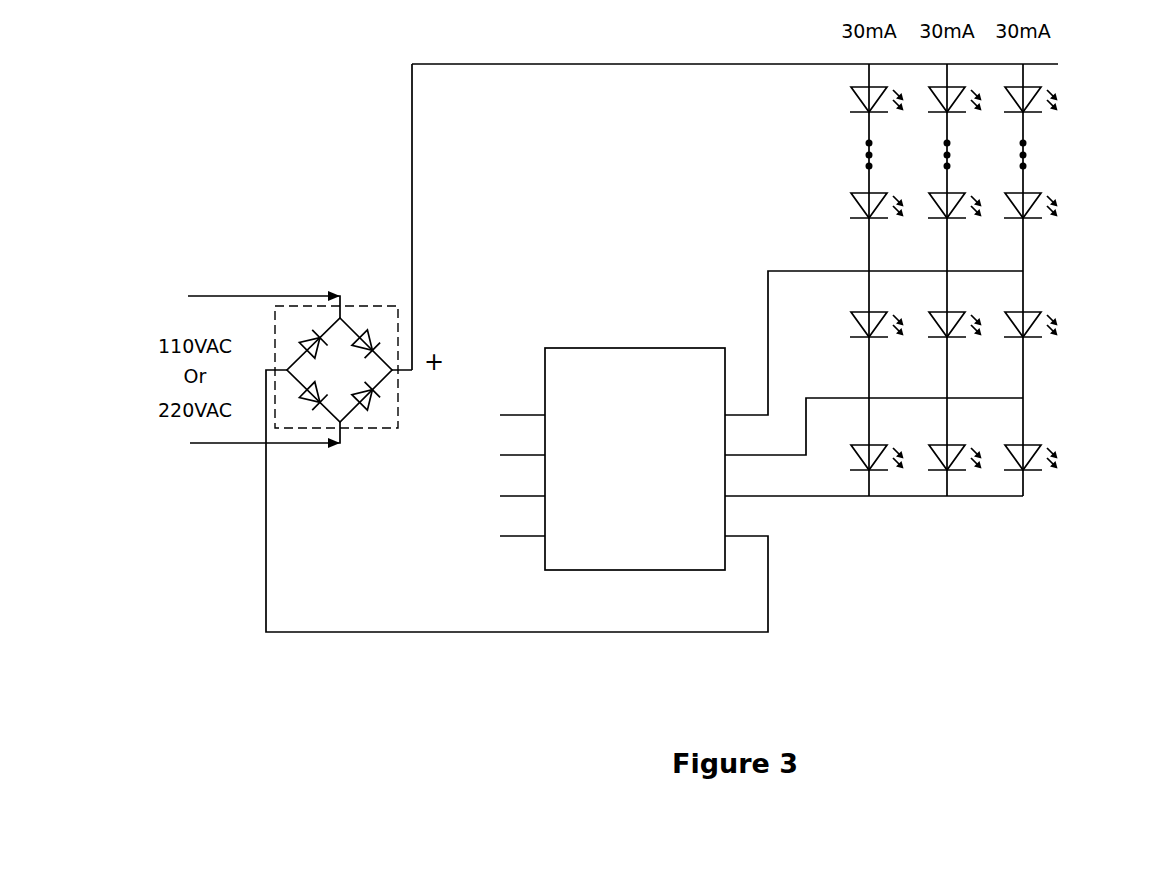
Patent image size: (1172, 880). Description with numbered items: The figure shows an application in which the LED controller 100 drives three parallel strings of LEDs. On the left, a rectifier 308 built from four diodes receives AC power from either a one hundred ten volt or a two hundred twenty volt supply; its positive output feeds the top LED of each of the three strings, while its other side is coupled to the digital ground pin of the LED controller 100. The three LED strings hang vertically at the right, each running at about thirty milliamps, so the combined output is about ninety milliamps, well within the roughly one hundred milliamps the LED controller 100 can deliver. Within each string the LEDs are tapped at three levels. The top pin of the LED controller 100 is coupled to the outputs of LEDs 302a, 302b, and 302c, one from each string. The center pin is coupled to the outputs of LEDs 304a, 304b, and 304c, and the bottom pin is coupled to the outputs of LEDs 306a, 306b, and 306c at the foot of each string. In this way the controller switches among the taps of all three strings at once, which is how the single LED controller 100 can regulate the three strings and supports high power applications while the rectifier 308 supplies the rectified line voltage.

The LED controller 100 is at (585, 348).
The rectifier 308 is at (369, 306).
The LED 302a is at (862, 193).
The LED 302b is at (941, 193).
The LED 302c is at (1026, 193).
The LED 304a is at (857, 312).
The LED 304b is at (939, 312).
The LED 304c is at (1030, 312).
The LED 306a is at (856, 457).
The LED 306b is at (933, 457).
The LED 306c is at (1010, 457).